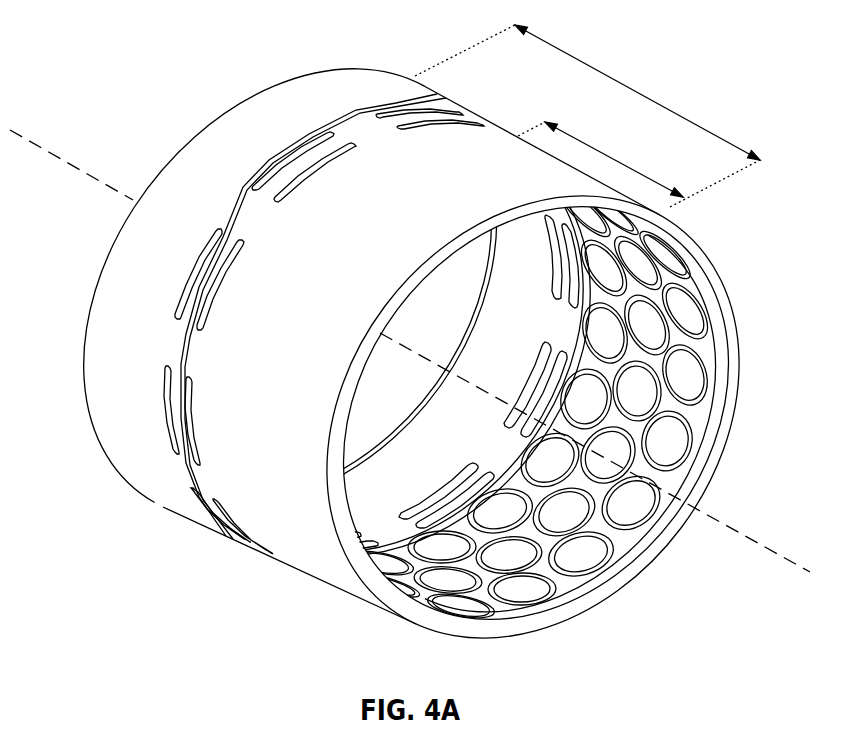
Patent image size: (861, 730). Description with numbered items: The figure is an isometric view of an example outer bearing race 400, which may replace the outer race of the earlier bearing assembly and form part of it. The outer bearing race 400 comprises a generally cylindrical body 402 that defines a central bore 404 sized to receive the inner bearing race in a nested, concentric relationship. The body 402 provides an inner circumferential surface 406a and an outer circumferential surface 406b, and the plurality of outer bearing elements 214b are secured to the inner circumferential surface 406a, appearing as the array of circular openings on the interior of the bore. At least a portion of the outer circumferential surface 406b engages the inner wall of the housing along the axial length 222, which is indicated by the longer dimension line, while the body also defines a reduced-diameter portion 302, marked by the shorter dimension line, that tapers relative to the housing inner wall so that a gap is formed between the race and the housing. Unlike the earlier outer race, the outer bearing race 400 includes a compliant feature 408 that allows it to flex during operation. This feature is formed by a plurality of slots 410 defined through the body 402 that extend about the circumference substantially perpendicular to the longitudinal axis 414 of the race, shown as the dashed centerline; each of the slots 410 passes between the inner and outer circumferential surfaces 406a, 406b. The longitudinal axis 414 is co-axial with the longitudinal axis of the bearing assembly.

The outer bearing race 400 is at (422, 373).
The body 402 is at (732, 352).
The central bore 404 is at (700, 415).
The inner circumferential surface 406a is at (350, 525).
The outer circumferential surface 406b is at (284, 532).
The compliant feature 408 is at (452, 98).
The slots 410 is at (387, 123).
The outer bearing elements 214b is at (690, 377).
The axial length 222 is at (641, 97).
The reduced-diameter portion 302 is at (613, 160).
The longitudinal axis 414 is at (762, 548).